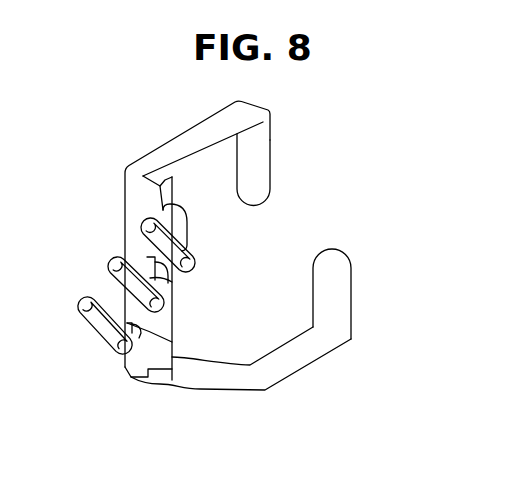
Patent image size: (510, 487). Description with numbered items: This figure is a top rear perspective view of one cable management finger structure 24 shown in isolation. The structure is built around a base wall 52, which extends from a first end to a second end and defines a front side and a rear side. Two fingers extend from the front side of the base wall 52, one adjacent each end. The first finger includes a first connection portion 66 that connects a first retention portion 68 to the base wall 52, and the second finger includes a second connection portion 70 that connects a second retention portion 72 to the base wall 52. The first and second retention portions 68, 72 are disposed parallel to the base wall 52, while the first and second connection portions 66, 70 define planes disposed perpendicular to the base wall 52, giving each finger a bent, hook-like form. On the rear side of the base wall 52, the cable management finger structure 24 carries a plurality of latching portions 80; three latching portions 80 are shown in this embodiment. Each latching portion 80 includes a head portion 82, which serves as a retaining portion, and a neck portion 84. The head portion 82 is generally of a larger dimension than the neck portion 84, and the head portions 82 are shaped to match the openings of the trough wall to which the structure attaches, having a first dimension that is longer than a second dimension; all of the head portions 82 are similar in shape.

The cable management finger structure 24 is at (213, 398).
The base wall 52 is at (163, 318).
The first connection portion 66 is at (182, 140).
The first retention portion 68 is at (265, 160).
The second connection portion 70 is at (300, 363).
The second retention portion 72 is at (340, 282).
The latching portion 80 is at (190, 250).
The head portion 82 is at (118, 262).
The neck portion 84 is at (177, 282).